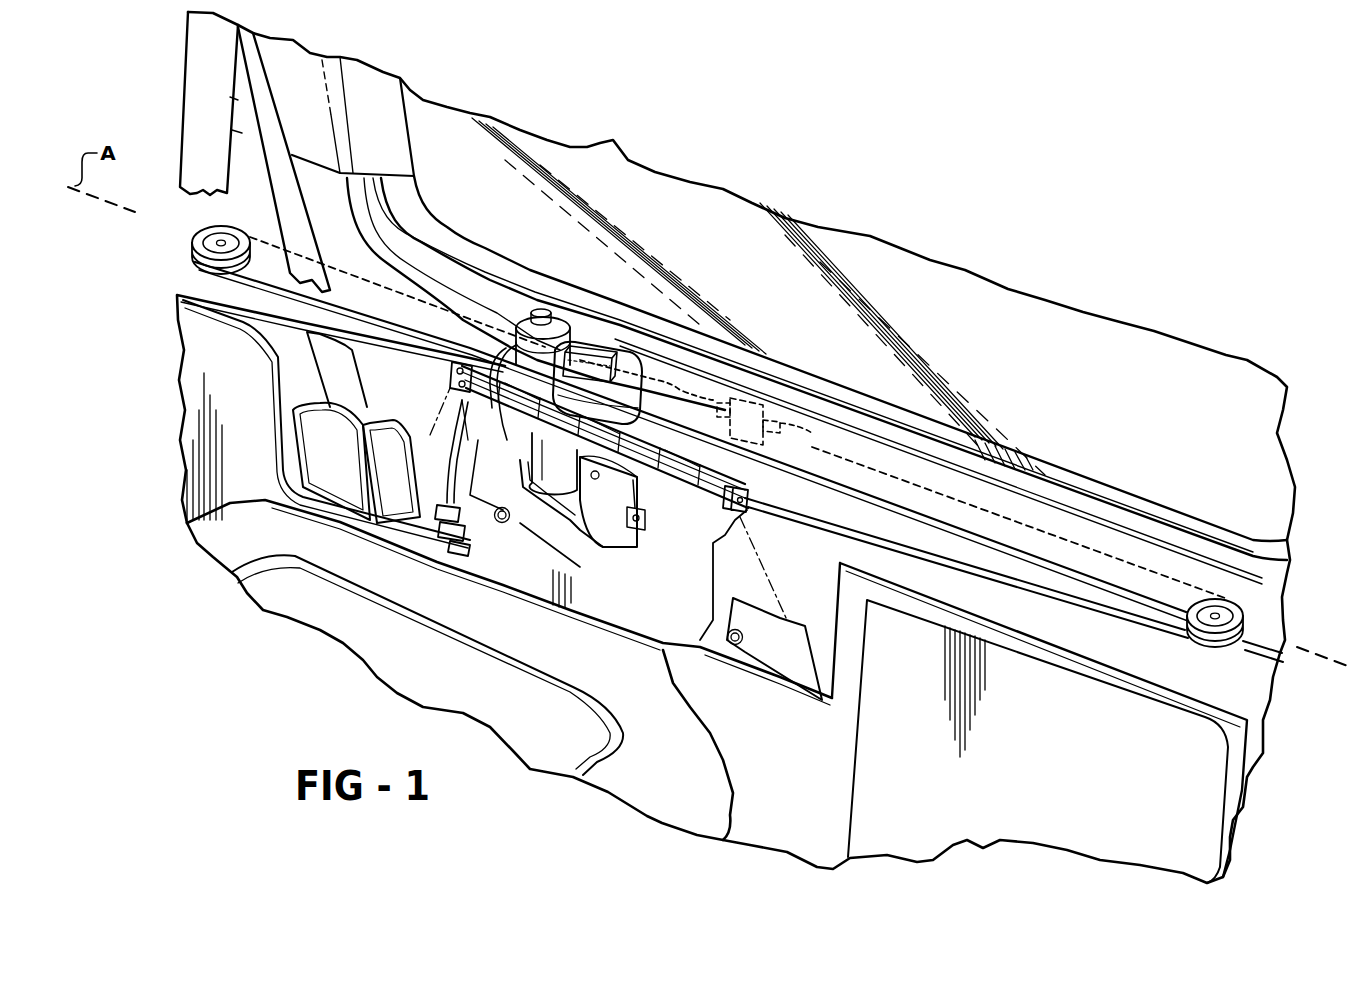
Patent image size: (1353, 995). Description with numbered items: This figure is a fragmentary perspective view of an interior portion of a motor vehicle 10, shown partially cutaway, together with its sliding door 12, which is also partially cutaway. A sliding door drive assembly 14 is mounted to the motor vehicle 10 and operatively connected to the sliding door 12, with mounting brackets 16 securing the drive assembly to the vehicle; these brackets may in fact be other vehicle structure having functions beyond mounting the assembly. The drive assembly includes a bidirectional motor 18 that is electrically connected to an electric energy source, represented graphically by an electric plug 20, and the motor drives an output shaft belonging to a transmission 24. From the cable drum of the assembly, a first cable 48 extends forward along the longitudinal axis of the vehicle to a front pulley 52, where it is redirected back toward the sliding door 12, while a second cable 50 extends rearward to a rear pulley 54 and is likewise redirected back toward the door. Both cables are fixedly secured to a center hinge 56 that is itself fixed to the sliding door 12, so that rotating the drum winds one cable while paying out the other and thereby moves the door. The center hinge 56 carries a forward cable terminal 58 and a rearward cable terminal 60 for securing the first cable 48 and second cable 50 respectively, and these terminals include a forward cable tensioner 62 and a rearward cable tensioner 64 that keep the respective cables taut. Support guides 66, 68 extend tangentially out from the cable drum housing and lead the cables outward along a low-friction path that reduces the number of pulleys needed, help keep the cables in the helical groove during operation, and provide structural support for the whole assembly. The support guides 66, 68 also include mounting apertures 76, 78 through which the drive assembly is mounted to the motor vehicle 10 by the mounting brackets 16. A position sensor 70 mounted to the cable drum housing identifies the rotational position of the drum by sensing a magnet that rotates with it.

The motor vehicle 10 is at (177, 375).
The sliding door 12 is at (598, 145).
The sliding door drive assembly 14 is at (635, 572).
The mounting brackets 16 is at (427, 452).
The motor 18 is at (520, 312).
The electric plug 20 is at (478, 530).
The transmission 24 is at (574, 556).
The first cable 48 is at (404, 353).
The second cable 50 is at (868, 545).
The front pulley 52 is at (200, 243).
The rear pulley 54 is at (1245, 600).
The center hinge 56 is at (762, 402).
The forward cable terminal 58 is at (481, 318).
The rearward cable terminal 60 is at (795, 432).
The forward cable tensioner 62 is at (715, 410).
The rearward cable tensioner 64 is at (1016, 522).
The support guide 66 is at (483, 406).
The support guide 68 is at (655, 486).
The position sensor 70 is at (598, 336).
The mounting aperture 76 is at (455, 372).
The mounting aperture 78 is at (752, 504).